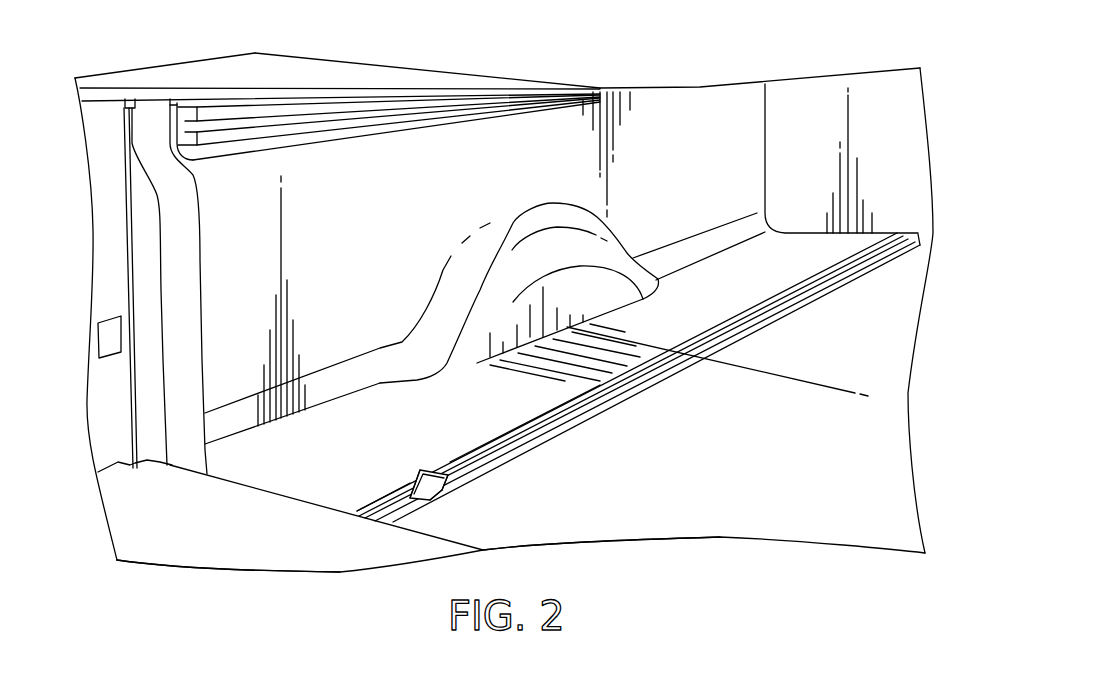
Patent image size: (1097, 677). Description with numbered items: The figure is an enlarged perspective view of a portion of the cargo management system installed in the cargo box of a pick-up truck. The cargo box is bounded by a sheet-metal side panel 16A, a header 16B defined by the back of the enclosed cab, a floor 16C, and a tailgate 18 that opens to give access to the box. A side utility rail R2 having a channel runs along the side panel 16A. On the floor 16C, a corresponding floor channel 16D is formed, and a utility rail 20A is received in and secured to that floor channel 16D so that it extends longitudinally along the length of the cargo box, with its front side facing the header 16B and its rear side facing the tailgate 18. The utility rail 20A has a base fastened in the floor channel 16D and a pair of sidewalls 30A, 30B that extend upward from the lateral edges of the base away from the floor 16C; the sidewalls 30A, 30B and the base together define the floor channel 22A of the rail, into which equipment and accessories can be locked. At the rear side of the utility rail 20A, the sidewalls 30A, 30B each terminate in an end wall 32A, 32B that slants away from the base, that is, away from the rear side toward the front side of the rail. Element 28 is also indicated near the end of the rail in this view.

The side panel 16A is at (158, 65).
The side utility rail R2 is at (329, 96).
The header 16B is at (818, 120).
The floor 16C is at (700, 478).
The floor channel 16D is at (392, 513).
The tailgate 18 is at (147, 527).
The utility rail 20A is at (705, 305).
The floor channel 22A is at (437, 477).
The slot 28 is at (452, 487).
The sidewall 30A is at (410, 490).
The sidewall 30B is at (533, 440).
The end wall 32A is at (402, 490).
The end wall 32B is at (450, 490).